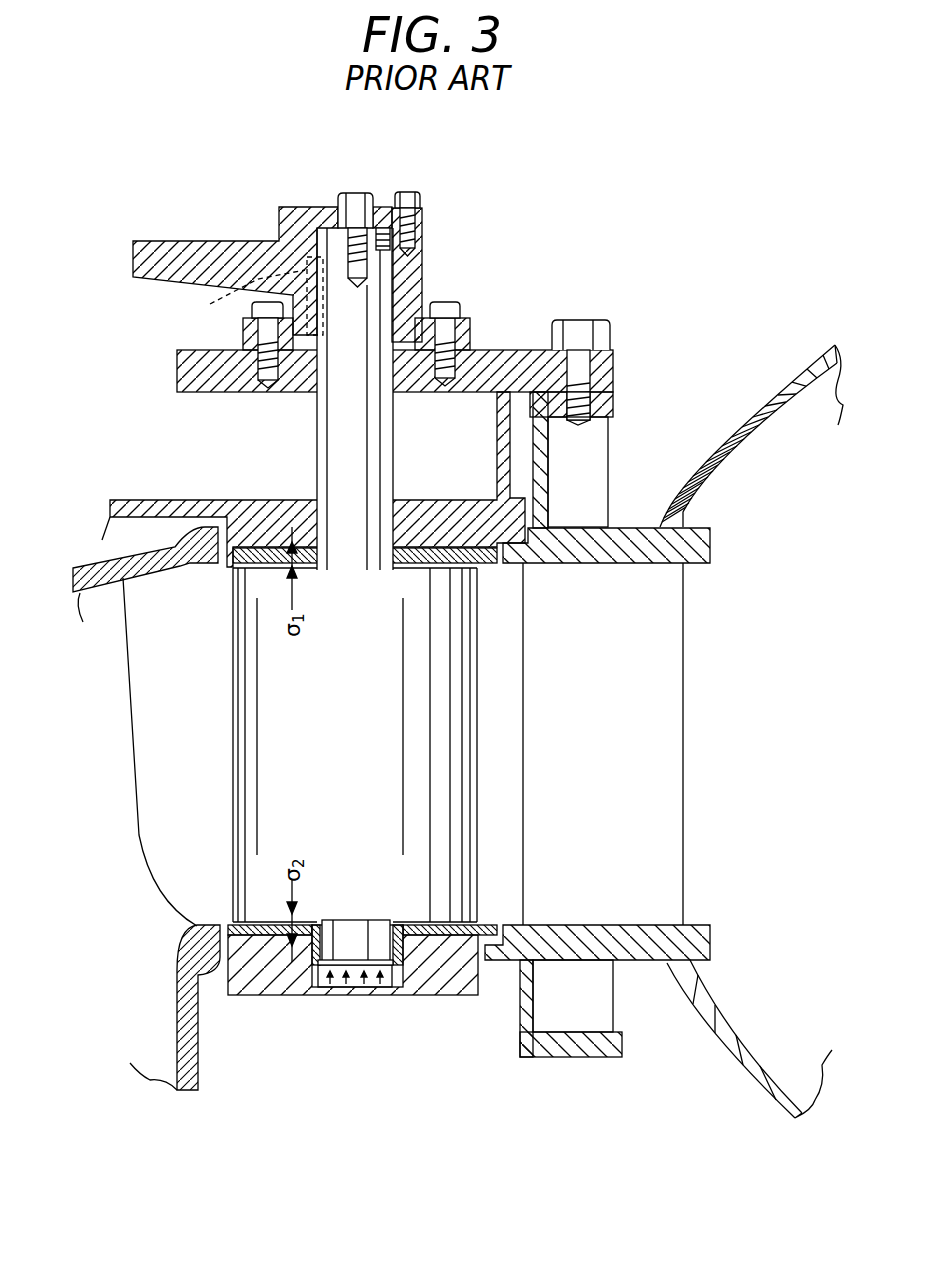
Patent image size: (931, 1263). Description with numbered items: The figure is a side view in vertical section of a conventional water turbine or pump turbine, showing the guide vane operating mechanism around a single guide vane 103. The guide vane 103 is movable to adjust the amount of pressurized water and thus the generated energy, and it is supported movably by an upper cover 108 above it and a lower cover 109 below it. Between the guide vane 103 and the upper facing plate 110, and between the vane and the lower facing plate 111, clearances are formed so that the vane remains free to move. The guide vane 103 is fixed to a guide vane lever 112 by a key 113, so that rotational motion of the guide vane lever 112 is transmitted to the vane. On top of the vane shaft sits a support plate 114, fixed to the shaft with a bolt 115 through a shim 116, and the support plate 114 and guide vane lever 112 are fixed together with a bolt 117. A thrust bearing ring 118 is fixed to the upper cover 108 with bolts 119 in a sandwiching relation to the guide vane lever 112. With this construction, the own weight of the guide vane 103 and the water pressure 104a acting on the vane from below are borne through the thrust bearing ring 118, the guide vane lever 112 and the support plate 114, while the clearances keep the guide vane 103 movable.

The guide vane 103 is at (478, 732).
The water pressure 104a is at (355, 980).
The upper cover 108 is at (505, 350).
The lower cover 109 is at (282, 997).
The upper facing plate 110 is at (228, 568).
The lower facing plate 111 is at (228, 922).
The guide vane lever 112 is at (422, 280).
The key 113 is at (239, 329).
The support plate 114 is at (307, 207).
The bolt 115 is at (355, 193).
The shim 116 is at (381, 205).
The bolt 117 is at (413, 192).
The thrust bearing ring 118 is at (470, 325).
The bolts 119 is at (448, 302).